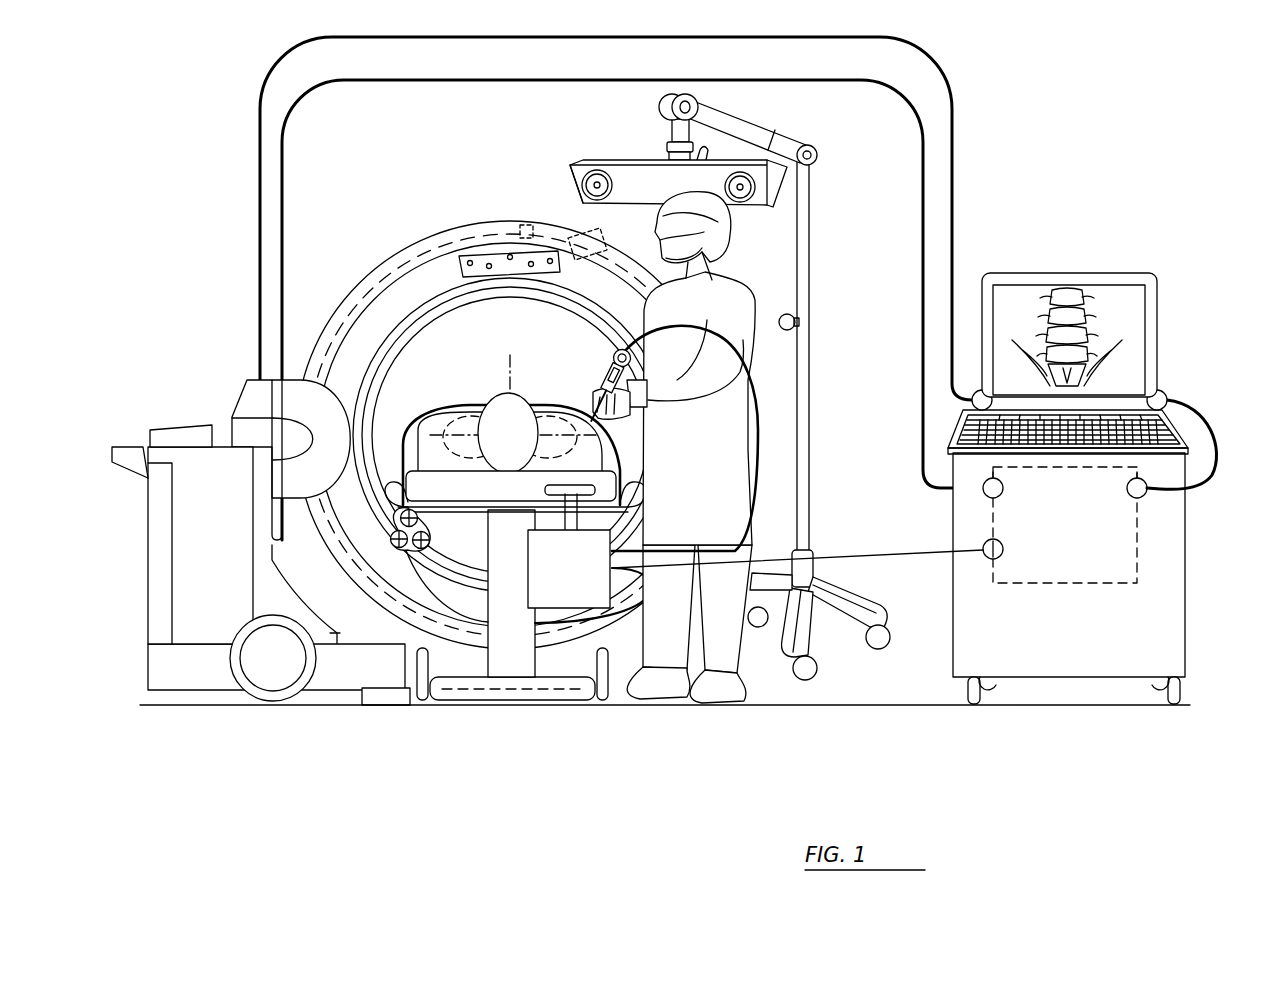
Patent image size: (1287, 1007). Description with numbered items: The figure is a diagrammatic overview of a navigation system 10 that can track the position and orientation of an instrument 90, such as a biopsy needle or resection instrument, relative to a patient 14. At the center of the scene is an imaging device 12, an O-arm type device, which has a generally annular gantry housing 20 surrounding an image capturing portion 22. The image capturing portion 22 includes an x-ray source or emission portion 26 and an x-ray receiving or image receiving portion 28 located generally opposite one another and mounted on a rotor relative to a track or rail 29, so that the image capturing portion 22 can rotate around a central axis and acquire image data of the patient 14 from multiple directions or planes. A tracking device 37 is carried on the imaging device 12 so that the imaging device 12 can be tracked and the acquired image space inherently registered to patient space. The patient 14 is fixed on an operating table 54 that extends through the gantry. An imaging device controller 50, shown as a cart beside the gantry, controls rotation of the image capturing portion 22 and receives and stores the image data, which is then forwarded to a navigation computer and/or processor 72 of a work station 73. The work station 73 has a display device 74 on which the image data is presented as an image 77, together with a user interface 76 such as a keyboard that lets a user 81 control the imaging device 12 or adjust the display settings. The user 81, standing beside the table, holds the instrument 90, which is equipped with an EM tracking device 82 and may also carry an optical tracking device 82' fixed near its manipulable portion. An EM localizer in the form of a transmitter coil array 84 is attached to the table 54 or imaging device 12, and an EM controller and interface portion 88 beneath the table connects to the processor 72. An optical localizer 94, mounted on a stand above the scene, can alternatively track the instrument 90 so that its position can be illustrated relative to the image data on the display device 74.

The navigation system 10 is at (1142, 126).
The imaging device 12 is at (385, 222).
The patient 14 is at (508, 398).
The gantry housing 20 is at (332, 312).
The image capturing portion 22 is at (457, 251).
The x-ray source or emission portion 26 is at (585, 228).
The x-ray receiving or image receiving portion 28 is at (443, 637).
The track or rail 29 is at (528, 230).
The tracking device 37 is at (458, 266).
The imaging device controller 50 is at (196, 433).
The operating table 54 is at (462, 508).
The navigation computer and/or processor 72 is at (1185, 575).
The work station 73 is at (1234, 410).
The display device 74 is at (1163, 296).
The user interface 76 is at (1083, 455).
The image 77 is at (1133, 325).
The user 81 is at (735, 286).
The tracking device 82 is at (643, 438).
The optical tracking device 82' is at (556, 334).
The transmitter coil array 84 is at (400, 525).
The EM controller and interface portion 88 is at (568, 590).
The instrument 90 is at (707, 325).
The optical localizer 94 is at (762, 128).